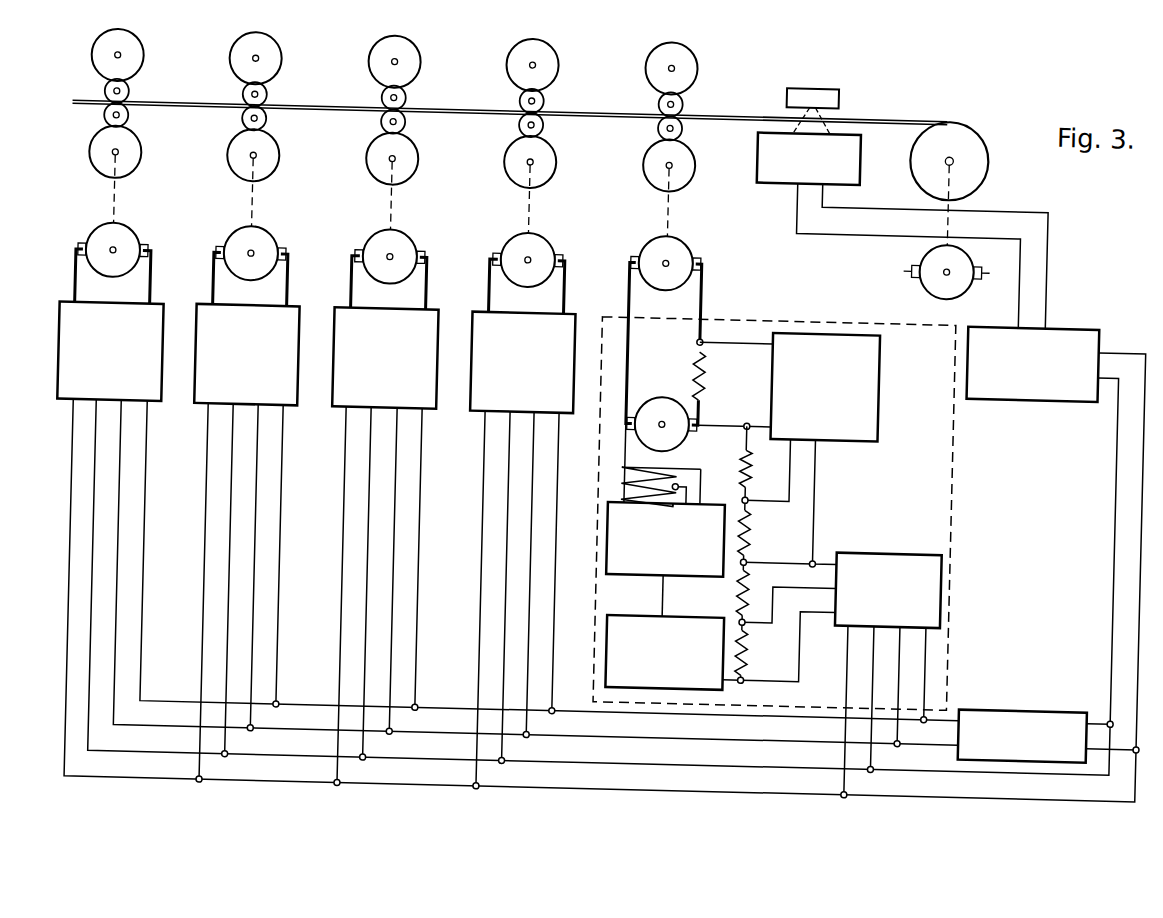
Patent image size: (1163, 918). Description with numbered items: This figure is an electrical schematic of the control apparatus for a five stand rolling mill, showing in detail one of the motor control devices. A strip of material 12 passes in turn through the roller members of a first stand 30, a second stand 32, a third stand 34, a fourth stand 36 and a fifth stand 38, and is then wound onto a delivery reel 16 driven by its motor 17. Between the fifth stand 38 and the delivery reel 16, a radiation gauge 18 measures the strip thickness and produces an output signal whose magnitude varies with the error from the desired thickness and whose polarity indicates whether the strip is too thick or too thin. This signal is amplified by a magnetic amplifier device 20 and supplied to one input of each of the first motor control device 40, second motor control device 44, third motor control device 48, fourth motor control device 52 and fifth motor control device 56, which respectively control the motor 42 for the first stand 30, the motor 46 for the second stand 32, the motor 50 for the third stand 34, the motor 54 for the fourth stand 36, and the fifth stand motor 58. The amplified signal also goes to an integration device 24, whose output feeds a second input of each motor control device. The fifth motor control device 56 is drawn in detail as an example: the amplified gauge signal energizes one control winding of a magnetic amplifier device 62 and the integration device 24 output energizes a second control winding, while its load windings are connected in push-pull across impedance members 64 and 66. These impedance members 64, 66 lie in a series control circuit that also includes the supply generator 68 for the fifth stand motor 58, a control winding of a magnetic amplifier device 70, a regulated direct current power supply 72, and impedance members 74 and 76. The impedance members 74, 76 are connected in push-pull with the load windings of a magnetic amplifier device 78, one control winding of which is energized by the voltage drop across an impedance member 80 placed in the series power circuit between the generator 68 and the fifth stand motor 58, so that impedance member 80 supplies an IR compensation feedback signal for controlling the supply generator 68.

The strip of material 12 is at (487, 98).
The delivery reel 16 is at (978, 117).
The motor 17 is at (969, 244).
The radiation gauge 18 is at (852, 131).
The magnetic amplifier device 20 is at (1096, 308).
The integration device 24 is at (1094, 686).
The first stand 30 is at (170, 45).
The second stand 32 is at (309, 45).
The third stand 34 is at (447, 45).
The fourth stand 36 is at (585, 45).
The fifth stand 38 is at (724, 45).
The first motor control device 40 is at (163, 308).
The motor 42 is at (134, 245).
The second motor control device 44 is at (298, 309).
The motor 46 is at (271, 245).
The third motor control device 48 is at (438, 309).
The motor 50 is at (410, 245).
The fourth motor control device 52 is at (573, 311).
The motor 54 is at (549, 245).
The fifth motor control device 56 is at (853, 300).
The fifth stand motor 58 is at (689, 243).
The magnetic amplifier device 62 is at (907, 534).
The impedance member 64 is at (761, 635).
The impedance member 66 is at (761, 567).
The supply generator 68 is at (675, 374).
The magnetic amplifier device 70 is at (728, 561).
The regulated direct current power supply 72 is at (659, 599).
The impedance member 74 is at (761, 459).
The impedance member 76 is at (761, 522).
The magnetic amplifier device 78 is at (839, 387).
The impedance member 80 is at (711, 357).